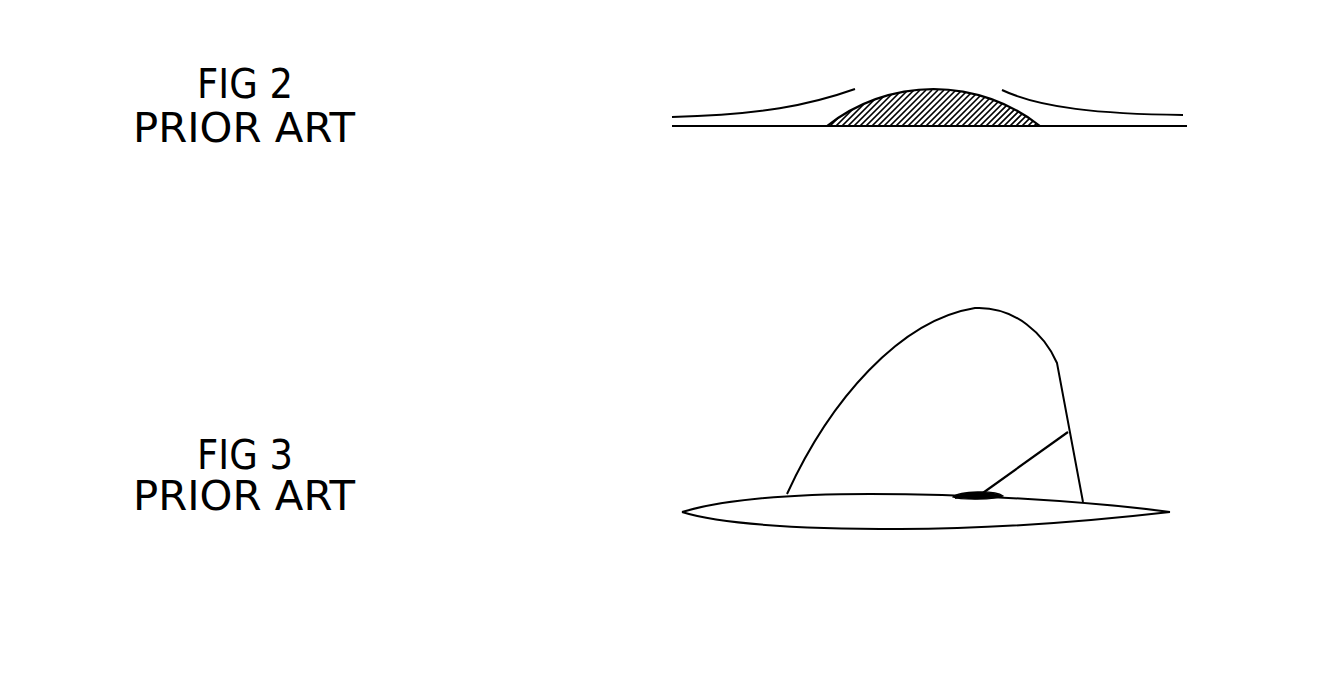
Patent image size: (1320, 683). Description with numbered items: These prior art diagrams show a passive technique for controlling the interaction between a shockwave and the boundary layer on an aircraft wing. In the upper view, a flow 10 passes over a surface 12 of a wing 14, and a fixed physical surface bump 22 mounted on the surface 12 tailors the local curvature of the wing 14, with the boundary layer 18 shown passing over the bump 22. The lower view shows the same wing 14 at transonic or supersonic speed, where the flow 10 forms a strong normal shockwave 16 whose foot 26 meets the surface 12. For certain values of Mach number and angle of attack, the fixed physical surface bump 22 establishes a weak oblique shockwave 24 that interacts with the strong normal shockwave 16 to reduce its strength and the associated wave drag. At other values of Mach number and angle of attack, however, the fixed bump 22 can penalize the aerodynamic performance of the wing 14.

In FIG. 2, the flow 10 is at (605, 70).
In FIG. 3, the flow 10 is at (605, 404).
In FIG. 2, the surface 12 is at (985, 126).
In FIG. 3, the surface 12 is at (1021, 500).
In FIG. 3, the wing 14 is at (1080, 513).
In FIG. 3, the strong normal shockwave 16 is at (1068, 408).
In FIG. 2, the boundary layer 18 is at (1163, 115).
In FIG. 2, the fixed physical surface bumps 22 is at (945, 97).
In FIG. 3, the fixed physical surface bumps 22 is at (958, 499).
In FIG. 3, the weak oblique shockwave 24 is at (998, 488).
In FIG. 3, the foot of the strong normal shockwave 26 is at (1058, 476).